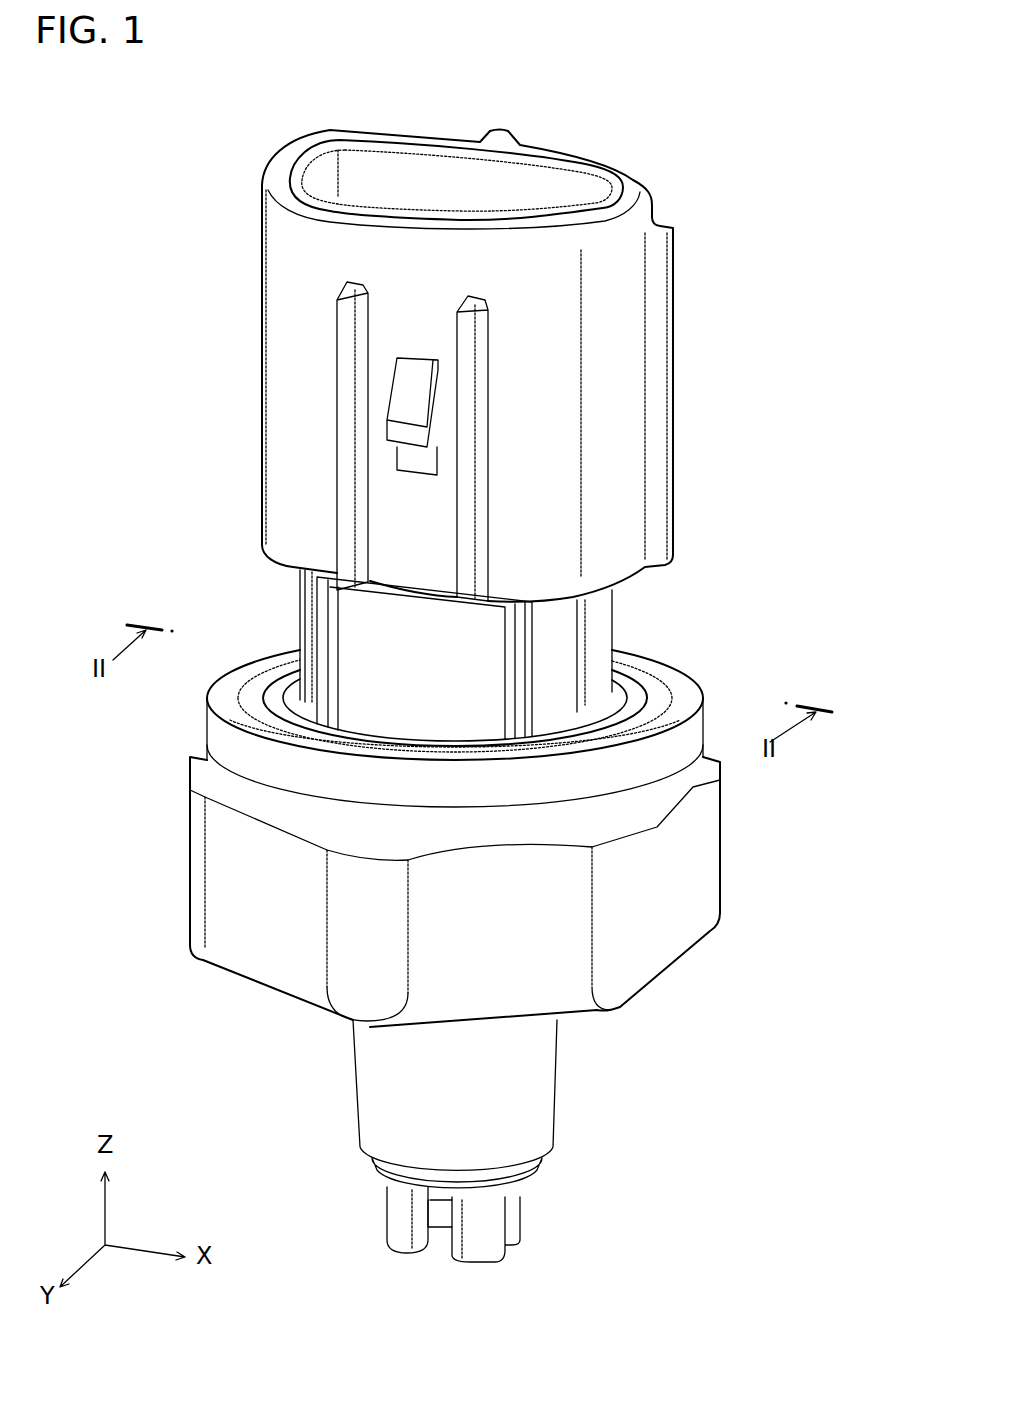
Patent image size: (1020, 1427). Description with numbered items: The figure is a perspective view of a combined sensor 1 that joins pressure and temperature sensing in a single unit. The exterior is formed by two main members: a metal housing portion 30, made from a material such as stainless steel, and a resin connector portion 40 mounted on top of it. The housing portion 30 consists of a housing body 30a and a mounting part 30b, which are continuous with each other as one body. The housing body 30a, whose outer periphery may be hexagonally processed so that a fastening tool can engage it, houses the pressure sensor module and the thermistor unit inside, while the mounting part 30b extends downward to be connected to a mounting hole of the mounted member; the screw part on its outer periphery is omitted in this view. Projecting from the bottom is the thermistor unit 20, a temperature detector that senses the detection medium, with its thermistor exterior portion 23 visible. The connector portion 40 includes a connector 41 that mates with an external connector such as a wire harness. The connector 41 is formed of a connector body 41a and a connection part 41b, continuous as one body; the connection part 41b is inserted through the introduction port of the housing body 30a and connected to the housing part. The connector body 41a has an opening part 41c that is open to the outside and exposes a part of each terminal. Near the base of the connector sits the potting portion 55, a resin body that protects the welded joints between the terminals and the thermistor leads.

The combined sensor 1 is at (740, 169).
The connector portion 40 is at (696, 379).
The connector 41 is at (768, 487).
The connector body 41a is at (620, 430).
The connection part 41b is at (613, 697).
The opening part 41c is at (402, 178).
The potting portion 55 is at (380, 635).
The housing portion 30 is at (709, 953).
The housing body 30a is at (228, 873).
The mounting part 30b is at (372, 1095).
The thermistor unit 20 is at (373, 1235).
The thermistor exterior portion 23 is at (445, 1217).